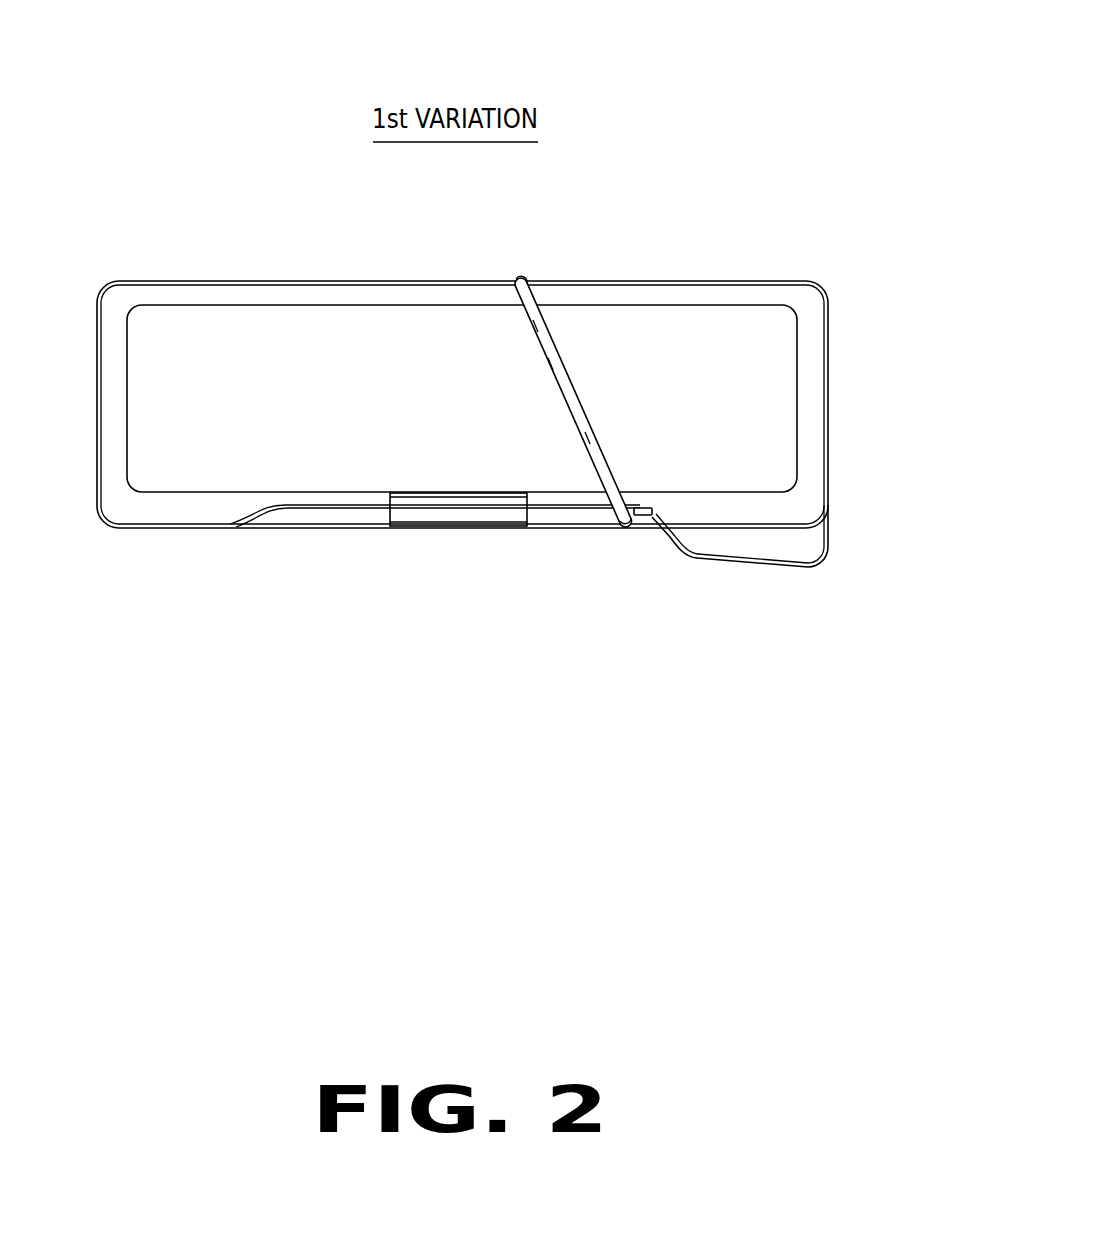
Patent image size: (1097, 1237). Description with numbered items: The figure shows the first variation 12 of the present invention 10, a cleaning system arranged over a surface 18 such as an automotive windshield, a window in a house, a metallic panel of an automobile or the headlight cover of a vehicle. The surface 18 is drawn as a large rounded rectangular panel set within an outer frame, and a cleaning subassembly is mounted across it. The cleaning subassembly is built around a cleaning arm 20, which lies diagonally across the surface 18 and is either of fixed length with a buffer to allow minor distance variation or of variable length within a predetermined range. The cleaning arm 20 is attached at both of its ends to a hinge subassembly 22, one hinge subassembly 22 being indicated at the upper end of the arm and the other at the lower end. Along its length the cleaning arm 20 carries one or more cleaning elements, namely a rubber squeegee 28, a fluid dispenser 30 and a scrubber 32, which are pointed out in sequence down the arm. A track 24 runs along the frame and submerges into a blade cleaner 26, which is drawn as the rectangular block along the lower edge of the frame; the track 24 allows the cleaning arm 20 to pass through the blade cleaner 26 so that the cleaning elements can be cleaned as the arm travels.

The present invention 10 is at (822, 130).
The first variation 12 is at (832, 255).
The surface 18 is at (257, 320).
The cleaning arm 20 is at (567, 370).
The hinge subassembly 22 is at (518, 280).
The track 24 is at (825, 449).
The blade cleaner 26 is at (423, 527).
The rubber squeegee 28 is at (533, 327).
The fluid dispenser 30 is at (547, 363).
The scrubber 32 is at (585, 438).